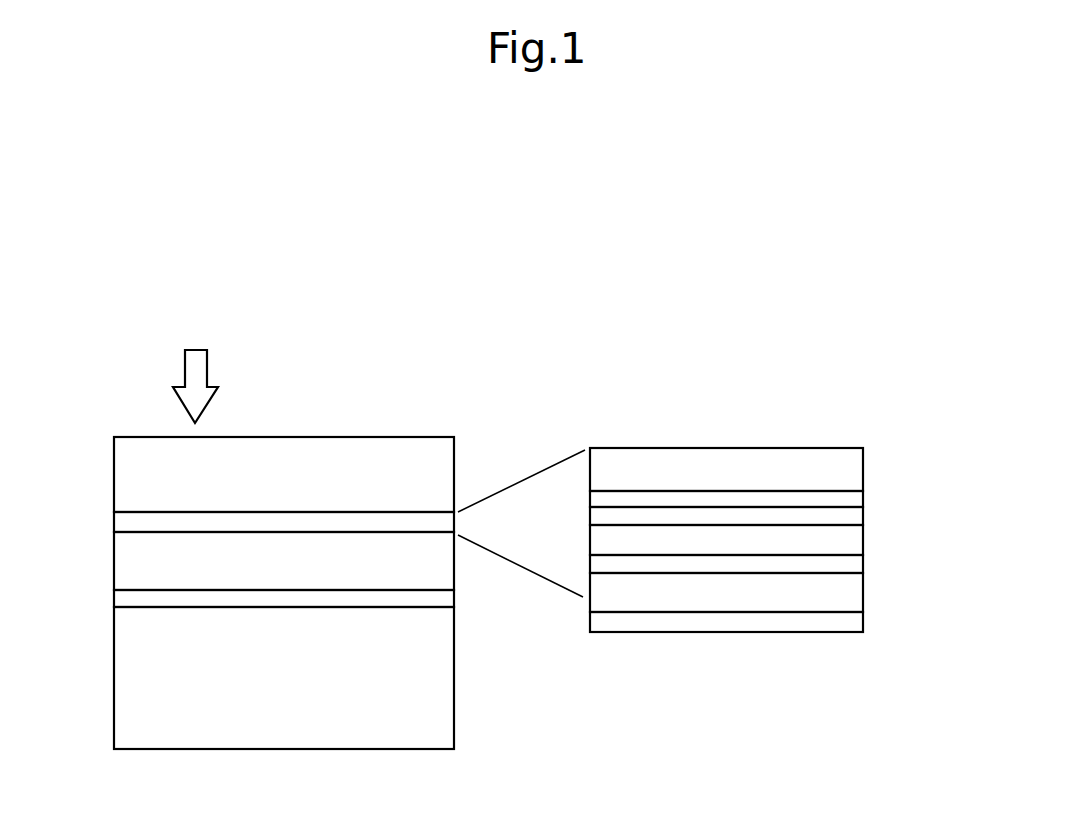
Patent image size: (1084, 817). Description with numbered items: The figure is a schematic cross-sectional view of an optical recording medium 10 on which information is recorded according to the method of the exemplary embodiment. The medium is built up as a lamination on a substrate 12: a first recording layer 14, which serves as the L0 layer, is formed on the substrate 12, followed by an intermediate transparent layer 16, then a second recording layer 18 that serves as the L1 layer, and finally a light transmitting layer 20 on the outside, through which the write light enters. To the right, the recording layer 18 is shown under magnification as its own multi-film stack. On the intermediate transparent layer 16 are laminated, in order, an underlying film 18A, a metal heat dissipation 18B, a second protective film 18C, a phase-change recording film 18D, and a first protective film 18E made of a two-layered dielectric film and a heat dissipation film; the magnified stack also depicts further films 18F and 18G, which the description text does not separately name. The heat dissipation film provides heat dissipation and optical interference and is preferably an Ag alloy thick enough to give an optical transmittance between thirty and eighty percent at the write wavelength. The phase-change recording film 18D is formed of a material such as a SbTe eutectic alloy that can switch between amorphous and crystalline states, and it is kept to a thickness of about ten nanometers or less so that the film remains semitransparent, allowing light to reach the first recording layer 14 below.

The optical recording medium 10 is at (501, 506).
The substrate 12 is at (128, 644).
The first recording layer 14 is at (128, 602).
The intermediate transparent layer 16 is at (128, 563).
The recording layer 18 is at (130, 523).
The light transmitting layer 20 is at (128, 472).
The underlying film 18A is at (845, 625).
The metal heat dissipation 18B is at (845, 595).
The second protective film 18C is at (847, 567).
The phase-change recording film 18D is at (847, 540).
The first protective film 18E is at (855, 517).
The recording sub-layer F 18F is at (853, 498).
The recording sub-layer G 18G is at (852, 463).